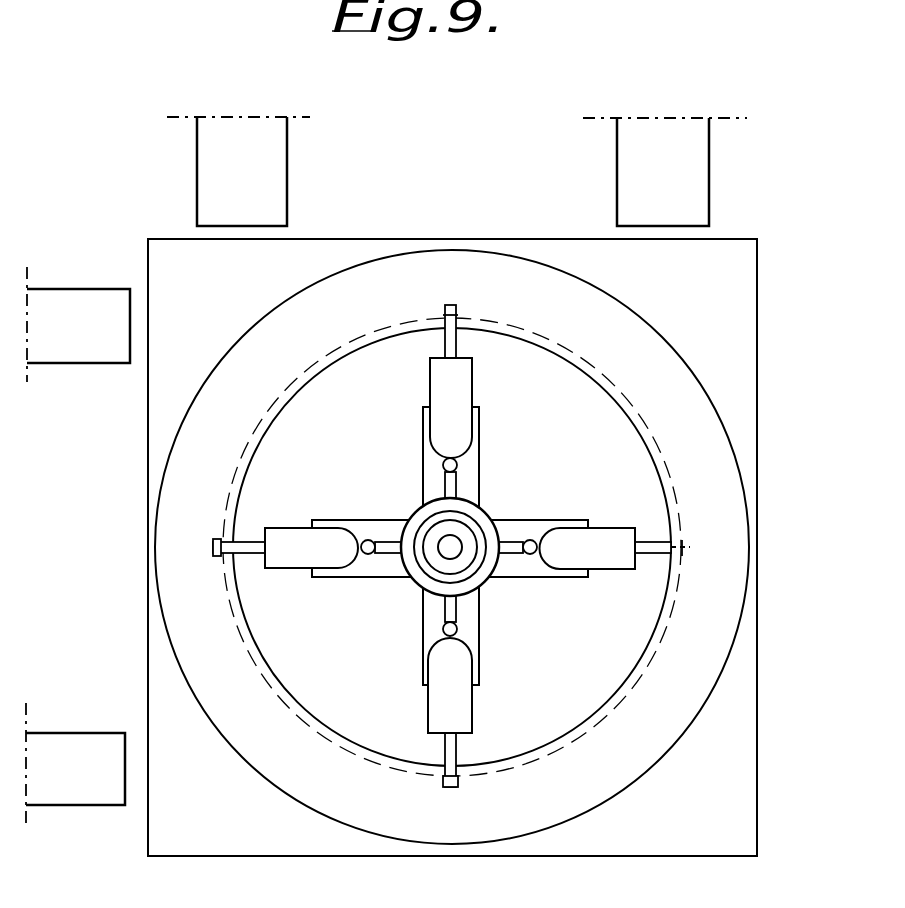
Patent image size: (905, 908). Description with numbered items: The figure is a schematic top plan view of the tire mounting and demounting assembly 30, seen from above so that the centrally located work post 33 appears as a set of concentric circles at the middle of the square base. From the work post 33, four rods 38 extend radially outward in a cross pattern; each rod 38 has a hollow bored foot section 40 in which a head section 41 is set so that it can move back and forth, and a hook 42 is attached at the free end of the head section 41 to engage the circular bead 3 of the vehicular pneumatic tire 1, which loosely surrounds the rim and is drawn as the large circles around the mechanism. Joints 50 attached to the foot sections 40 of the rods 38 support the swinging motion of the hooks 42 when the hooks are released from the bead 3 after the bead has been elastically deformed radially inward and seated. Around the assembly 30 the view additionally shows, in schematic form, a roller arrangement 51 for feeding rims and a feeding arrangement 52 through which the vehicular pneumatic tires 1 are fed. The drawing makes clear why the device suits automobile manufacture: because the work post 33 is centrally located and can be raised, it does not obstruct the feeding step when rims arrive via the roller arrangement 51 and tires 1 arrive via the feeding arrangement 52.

The vehicular pneumatic tire 1 is at (667, 390).
The circular bead 3 is at (665, 465).
The assembly 30 is at (727, 293).
The work post 33 is at (450, 547).
The rods 38 is at (513, 549).
The foot section 40 is at (452, 388).
The head section 41 is at (650, 545).
The hooks 42 is at (680, 578).
The joints 50 is at (443, 466).
The roller arrangement 51 is at (82, 765).
The feeding arrangement 52 is at (268, 195).